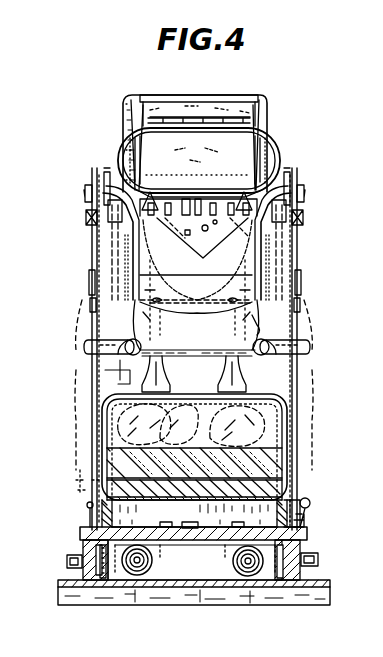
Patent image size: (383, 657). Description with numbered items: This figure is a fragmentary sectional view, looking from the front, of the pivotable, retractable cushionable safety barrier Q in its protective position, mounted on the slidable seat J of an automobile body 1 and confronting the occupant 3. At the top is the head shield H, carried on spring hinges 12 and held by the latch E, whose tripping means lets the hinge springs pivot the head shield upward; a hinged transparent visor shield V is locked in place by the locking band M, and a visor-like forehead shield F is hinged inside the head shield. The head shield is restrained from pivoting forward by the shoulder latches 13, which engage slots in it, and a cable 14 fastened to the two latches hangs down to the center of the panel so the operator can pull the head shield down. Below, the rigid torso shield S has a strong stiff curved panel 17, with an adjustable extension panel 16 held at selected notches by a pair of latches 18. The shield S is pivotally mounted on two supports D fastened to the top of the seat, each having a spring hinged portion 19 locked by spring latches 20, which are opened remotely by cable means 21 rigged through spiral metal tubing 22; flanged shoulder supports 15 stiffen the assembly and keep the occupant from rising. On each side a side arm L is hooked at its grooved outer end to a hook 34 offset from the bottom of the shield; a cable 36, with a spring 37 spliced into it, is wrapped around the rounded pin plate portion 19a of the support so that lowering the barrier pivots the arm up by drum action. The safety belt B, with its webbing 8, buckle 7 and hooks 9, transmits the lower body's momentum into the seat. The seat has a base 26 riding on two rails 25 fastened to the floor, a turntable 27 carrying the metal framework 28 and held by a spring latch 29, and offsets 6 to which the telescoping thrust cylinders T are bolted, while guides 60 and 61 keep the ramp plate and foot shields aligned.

The head shield H is at (175, 80).
The safety barrier Q is at (107, 106).
The locking band M is at (207, 116).
The visor shield V is at (284, 130).
The latches 13 is at (255, 192).
The forehead shield F is at (172, 145).
The hinges 12 is at (198, 222).
The latch E is at (190, 246).
The curved panel 17 is at (196, 266).
The cable 14 is at (180, 283).
The extension panel 16 is at (206, 352).
The latches 18 is at (146, 312).
The cable means 21 is at (256, 322).
The spring latches 20 is at (108, 200).
The shoulder supports 15 is at (118, 212).
The spiral metal tubing 22 is at (130, 265).
The occupant 3 is at (84, 320).
The pin plate portion 19a is at (92, 180).
The hinged portions 19 is at (92, 198).
The cable 36 is at (90, 282).
The spring 37 is at (88, 300).
The side arms L is at (79, 358).
The hooks 34 is at (130, 355).
The torso shield S is at (147, 342).
The webbing 8 is at (105, 428).
The buckle 7 is at (144, 424).
The hooks 9 is at (211, 425).
The safety belt B is at (258, 413).
The slidable seat J is at (59, 481).
The turntable 27 is at (170, 530).
The metal framework 28 is at (285, 506).
The spring latch 29 is at (308, 508).
The automobile body 1 is at (82, 582).
The guide 61 is at (76, 555).
The guide 60 is at (300, 555).
The base 26 is at (92, 570).
The rails 25 is at (104, 570).
The offsets 6 is at (152, 555).
The thrust cylinders T is at (166, 575).
The supports D is at (109, 159).